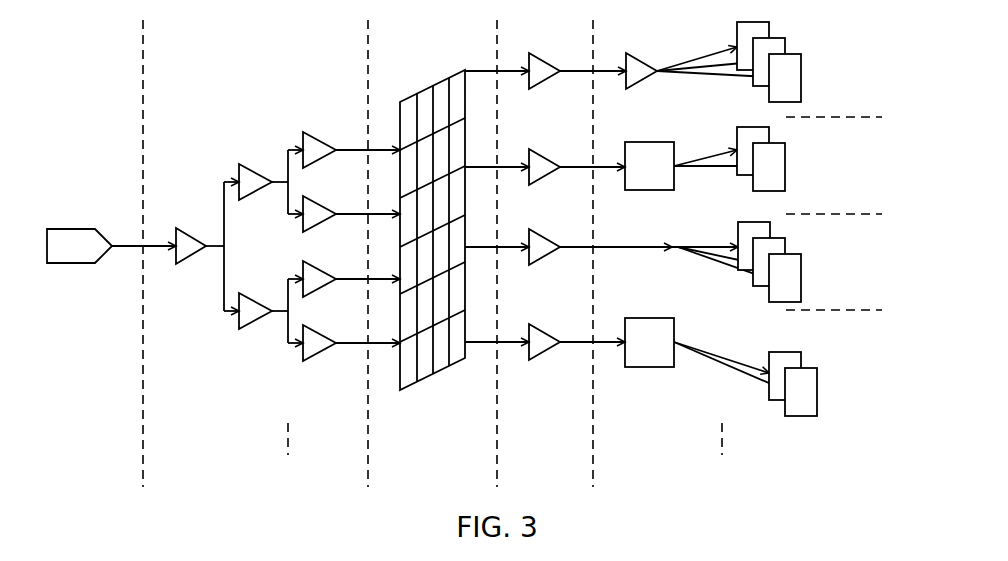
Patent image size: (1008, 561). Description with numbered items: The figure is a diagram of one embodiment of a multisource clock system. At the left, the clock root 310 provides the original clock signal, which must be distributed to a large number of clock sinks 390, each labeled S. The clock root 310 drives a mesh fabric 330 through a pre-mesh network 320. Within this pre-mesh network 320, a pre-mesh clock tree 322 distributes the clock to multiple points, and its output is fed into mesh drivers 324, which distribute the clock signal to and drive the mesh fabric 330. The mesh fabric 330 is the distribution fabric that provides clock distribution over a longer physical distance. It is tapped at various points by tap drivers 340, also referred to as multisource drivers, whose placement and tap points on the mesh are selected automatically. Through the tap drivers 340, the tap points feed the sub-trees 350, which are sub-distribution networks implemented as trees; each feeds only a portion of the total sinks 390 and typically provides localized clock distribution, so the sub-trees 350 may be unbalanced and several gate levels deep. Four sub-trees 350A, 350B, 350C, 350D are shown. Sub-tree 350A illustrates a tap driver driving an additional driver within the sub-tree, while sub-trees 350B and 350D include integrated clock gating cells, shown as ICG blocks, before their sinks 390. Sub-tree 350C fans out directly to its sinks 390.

The clock root 310 is at (111, 355).
The pre-mesh network 320 is at (288, 307).
The pre-mesh clock tree 322 is at (207, 315).
The mesh drivers 324 is at (319, 290).
The mesh fabric 330 is at (432, 276).
The tap drivers 340 is at (526, 267).
The sub-trees 350 is at (715, 252).
The sub-tree 350A is at (715, 68).
The sub-tree 350B is at (715, 166).
The sub-tree 350C is at (715, 263).
The sub-tree 350D is at (715, 354).
The clock sinks 390 is at (774, 235).